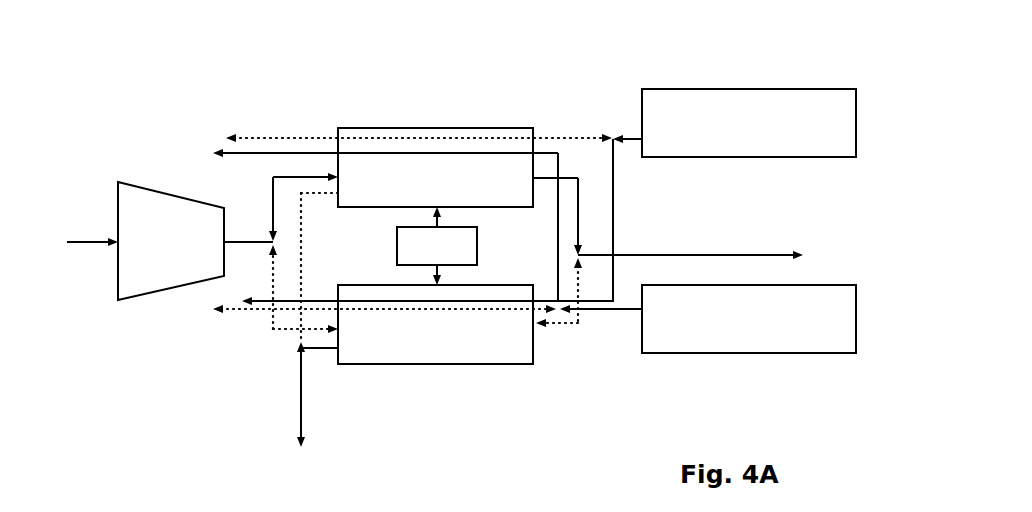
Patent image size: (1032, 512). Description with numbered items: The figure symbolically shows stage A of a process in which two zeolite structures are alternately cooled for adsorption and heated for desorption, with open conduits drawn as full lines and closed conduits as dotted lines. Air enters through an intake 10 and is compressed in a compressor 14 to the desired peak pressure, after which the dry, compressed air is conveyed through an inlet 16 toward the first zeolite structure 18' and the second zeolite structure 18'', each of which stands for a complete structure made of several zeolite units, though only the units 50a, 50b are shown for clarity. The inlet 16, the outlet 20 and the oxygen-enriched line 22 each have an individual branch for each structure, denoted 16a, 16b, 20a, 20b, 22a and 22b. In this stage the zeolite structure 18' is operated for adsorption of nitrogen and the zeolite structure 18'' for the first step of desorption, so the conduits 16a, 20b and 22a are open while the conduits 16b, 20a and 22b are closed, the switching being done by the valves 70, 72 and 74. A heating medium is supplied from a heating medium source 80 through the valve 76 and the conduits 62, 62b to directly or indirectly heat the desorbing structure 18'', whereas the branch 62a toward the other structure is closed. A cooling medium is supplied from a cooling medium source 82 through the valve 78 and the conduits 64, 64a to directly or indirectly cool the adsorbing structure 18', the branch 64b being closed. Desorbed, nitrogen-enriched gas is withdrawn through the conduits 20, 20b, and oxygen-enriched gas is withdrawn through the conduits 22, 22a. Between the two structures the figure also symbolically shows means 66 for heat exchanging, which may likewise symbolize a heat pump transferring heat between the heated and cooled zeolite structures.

The intake 10 is at (80, 243).
The compressor 14 is at (135, 300).
The inlet 16 is at (248, 243).
The inlet branch conduit 16a is at (272, 179).
The inlet branch conduit 16b is at (283, 330).
The zeolite structure 18' is at (366, 131).
The zeolite unit 50a is at (357, 208).
The zeolite structure 18'' is at (435, 361).
The zeolite unit 50b is at (515, 365).
The outlet 20 is at (300, 398).
The outlet branch conduit 20a is at (300, 212).
The outlet branch conduit 20b is at (320, 350).
The oxygen enriched gas line 22 is at (788, 252).
The oxygen enriched gas branch conduit 22a is at (578, 212).
The oxygen enriched gas branch conduit 22b is at (563, 312).
The heating medium conduit 62 is at (627, 138).
The heating medium branch conduit 62a is at (558, 138).
The heating medium branch conduit 62b is at (580, 240).
The cooling medium conduit 64 is at (607, 310).
The cooling medium branch conduit 64a is at (558, 240).
The cooling medium branch conduit 64b is at (240, 310).
The means for heat exchanging 66 is at (437, 246).
The valve 70 is at (270, 249).
The valve 72 is at (304, 350).
The valve 74 is at (578, 252).
The valve 76 is at (608, 137).
The valve 78 is at (576, 325).
The heating medium source 80 is at (777, 89).
The cooling medium source 82 is at (777, 353).